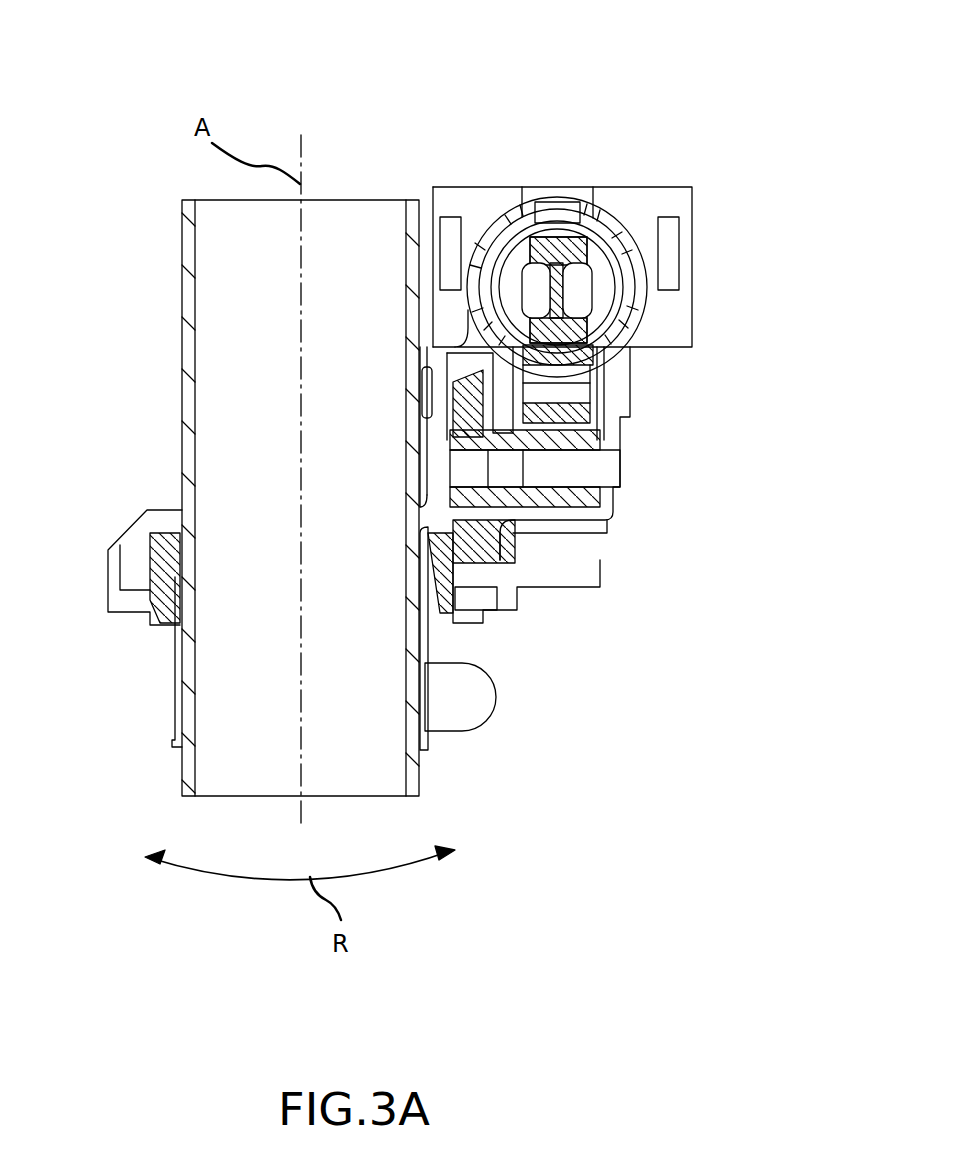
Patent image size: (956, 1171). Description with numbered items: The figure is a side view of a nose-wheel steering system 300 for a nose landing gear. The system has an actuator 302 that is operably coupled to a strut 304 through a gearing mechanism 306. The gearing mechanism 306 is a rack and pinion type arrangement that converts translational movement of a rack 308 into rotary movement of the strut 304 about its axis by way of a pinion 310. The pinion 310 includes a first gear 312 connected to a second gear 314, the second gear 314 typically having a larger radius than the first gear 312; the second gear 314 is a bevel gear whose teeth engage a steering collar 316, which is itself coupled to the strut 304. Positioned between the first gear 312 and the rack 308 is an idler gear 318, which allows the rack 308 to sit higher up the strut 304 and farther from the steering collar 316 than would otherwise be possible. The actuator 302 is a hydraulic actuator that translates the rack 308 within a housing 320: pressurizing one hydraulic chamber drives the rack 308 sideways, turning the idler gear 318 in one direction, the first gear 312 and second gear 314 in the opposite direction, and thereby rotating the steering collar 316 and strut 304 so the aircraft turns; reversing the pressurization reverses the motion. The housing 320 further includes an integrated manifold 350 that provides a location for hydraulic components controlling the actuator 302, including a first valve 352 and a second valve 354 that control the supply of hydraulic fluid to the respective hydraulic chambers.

The nose-wheel steering system 300 is at (200, 86).
The actuator 302 is at (635, 162).
The strut 304 is at (190, 360).
The gearing mechanism 306 is at (590, 565).
The rack 308 is at (580, 337).
The pinion 310 is at (477, 542).
The first gear 312 is at (560, 497).
The second gear 314 is at (477, 554).
The steering collar 316 is at (440, 580).
The idler gear 318 is at (587, 412).
The housing 320 is at (691, 246).
The integrated manifold 350 is at (673, 201).
The first valve 352 is at (668, 280).
The second valve 354 is at (450, 232).